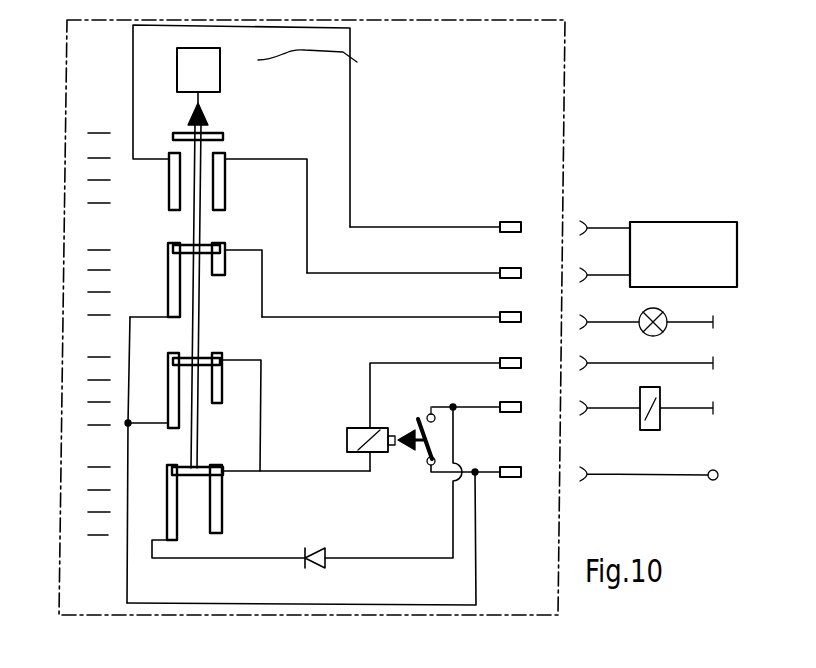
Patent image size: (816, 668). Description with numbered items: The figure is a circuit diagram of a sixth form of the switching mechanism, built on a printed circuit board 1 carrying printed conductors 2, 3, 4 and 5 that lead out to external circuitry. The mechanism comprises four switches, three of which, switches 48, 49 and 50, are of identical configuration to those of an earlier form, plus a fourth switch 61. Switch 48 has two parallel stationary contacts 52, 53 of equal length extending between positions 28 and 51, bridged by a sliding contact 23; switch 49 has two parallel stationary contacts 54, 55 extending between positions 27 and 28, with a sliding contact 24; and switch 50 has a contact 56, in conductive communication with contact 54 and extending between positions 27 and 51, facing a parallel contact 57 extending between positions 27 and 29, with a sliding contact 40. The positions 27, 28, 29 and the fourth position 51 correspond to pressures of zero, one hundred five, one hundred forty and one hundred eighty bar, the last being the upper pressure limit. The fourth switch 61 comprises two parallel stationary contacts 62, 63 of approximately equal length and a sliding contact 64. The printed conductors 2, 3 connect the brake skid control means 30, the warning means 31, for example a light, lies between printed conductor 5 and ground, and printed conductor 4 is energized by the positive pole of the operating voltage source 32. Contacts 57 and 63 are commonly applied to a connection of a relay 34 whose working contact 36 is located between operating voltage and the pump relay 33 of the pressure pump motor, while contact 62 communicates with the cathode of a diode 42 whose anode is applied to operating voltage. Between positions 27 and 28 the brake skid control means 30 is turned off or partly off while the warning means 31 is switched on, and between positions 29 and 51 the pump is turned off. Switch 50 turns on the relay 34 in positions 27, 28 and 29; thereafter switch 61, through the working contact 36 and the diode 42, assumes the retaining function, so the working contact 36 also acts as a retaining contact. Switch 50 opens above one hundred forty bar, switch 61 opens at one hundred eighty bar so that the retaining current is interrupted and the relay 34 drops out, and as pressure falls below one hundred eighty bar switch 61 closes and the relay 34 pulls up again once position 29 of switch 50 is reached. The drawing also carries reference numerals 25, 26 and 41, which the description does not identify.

The printed circuit board 1 is at (558, 101).
The printed conductor 2 is at (402, 227).
The printed conductor 3 is at (398, 273).
The printed conductor 4 is at (130, 346).
The printed conductor 5 is at (398, 317).
The sliding contact 23 is at (178, 132).
The sliding contact 24 is at (186, 244).
The pressure gauge pointer 25 is at (206, 100).
The pressure gauge 26 is at (222, 62).
The position 27 is at (91, 467).
The position 28 is at (89, 490).
The position 29 is at (89, 512).
The brake skid control means 30 is at (643, 170).
The warning means 31 is at (664, 312).
The operating voltage source 32 is at (712, 481).
The pump relay 33 is at (658, 404).
The relay 34 is at (368, 428).
The working contact 36 is at (440, 434).
The sliding contact 40 is at (205, 358).
The conductor 41 is at (418, 362).
The diode 42 is at (322, 553).
The switch 48 is at (213, 152).
The switch 49 is at (215, 258).
The switch 50 is at (193, 388).
The fourth position 51 is at (97, 548).
The stationary contact 52 is at (169, 180).
The stationary contact 53 is at (225, 180).
The stationary contact 54 is at (168, 264).
The stationary contact 55 is at (236, 234).
The contact 56 is at (168, 398).
The contact 57 is at (204, 405).
The fourth switch 61 is at (228, 493).
The stationary contact 62 is at (167, 512).
The stationary contact 63 is at (250, 500).
The sliding contact 64 is at (223, 470).